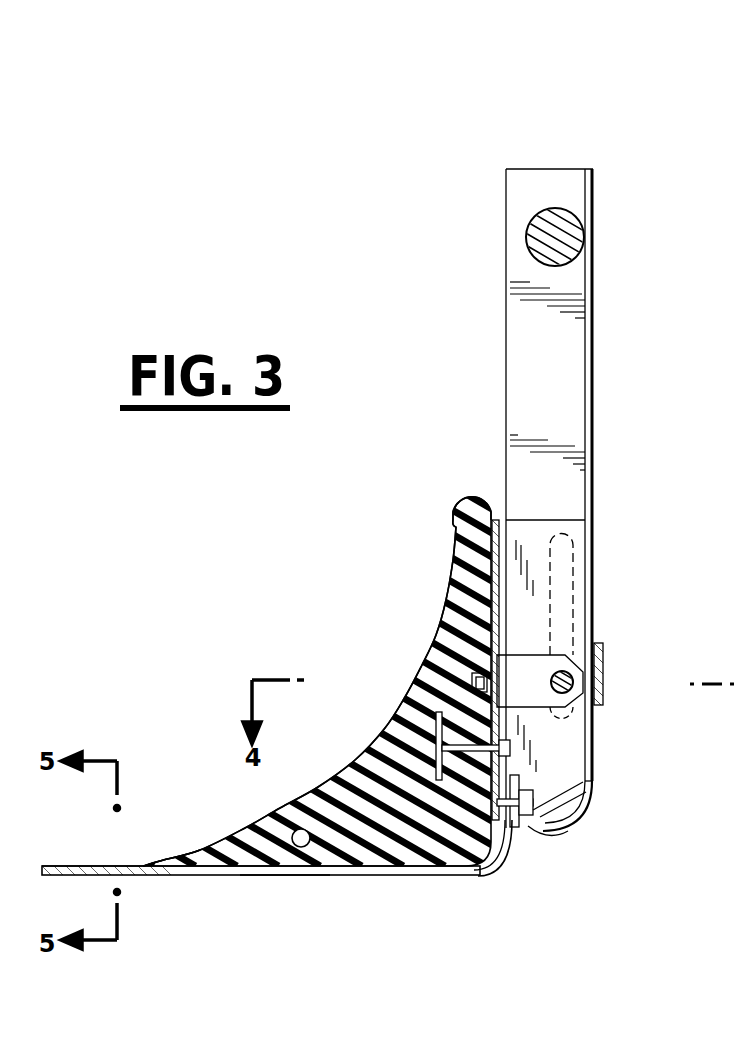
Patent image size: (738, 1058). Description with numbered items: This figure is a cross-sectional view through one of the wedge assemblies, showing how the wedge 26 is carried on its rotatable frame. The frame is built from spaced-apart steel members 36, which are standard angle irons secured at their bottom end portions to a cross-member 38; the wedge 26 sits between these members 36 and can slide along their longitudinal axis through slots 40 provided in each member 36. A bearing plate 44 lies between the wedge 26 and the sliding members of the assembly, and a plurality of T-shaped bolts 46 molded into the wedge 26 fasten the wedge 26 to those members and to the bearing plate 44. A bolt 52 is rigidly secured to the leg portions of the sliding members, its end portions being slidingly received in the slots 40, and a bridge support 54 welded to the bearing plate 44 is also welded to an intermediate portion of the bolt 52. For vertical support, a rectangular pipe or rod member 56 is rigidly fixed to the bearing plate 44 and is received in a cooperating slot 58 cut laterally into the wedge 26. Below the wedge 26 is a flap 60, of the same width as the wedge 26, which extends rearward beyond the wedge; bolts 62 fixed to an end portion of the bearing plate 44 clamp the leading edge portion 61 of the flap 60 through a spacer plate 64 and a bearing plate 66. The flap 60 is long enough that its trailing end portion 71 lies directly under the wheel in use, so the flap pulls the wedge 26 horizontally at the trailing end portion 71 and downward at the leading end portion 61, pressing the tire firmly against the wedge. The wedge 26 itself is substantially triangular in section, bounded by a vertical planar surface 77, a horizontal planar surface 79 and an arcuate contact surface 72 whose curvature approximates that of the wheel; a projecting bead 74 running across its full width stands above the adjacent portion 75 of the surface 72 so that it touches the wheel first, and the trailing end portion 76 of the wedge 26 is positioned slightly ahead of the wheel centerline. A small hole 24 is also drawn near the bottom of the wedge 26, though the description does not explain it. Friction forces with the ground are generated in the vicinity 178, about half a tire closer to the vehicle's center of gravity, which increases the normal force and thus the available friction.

The bolt hole 24 is at (310, 845).
The wedge 26 is at (230, 875).
The steel members 36 is at (515, 320).
The cross-member 38 is at (605, 660).
The slots 40 is at (552, 552).
The bearing plate 44 is at (452, 588).
The T-shaped bolts 46 is at (438, 724).
The bolt 52 is at (528, 232).
The bridge support 54 is at (565, 655).
The rectangular pipe or rod member 56 is at (472, 688).
The slot 58 is at (432, 665).
The flap 60 is at (72, 866).
The leading edge portion 61 is at (520, 835).
The bolts 62 is at (568, 835).
The spacer plate 64 is at (520, 775).
The bearing plate 66 is at (545, 805).
The trailing end portion 71 is at (100, 866).
The contact surface 72 is at (332, 775).
The projecting portion or bead 74 is at (455, 500).
The adjacent portion 75 is at (458, 543).
The trailing end portion 76 is at (178, 852).
The vertical planar surface 77 is at (440, 625).
The horizontal planar surface 79 is at (288, 875).
The vicinity of friction forces 178 is at (474, 876).